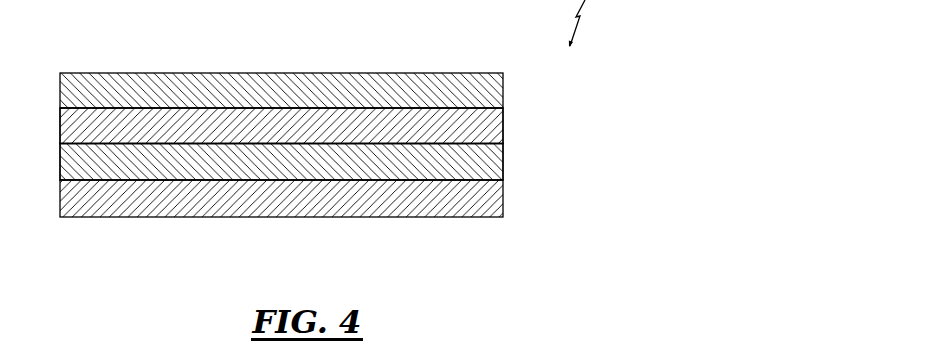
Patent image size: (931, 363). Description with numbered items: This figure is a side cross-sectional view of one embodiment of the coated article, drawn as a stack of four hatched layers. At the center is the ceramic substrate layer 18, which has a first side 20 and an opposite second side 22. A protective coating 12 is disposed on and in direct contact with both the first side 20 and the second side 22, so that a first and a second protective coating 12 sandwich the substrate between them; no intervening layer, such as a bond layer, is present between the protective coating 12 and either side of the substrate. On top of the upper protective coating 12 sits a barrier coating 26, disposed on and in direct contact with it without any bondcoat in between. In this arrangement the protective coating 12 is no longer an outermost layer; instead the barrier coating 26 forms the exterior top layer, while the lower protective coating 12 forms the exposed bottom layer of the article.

The protective coating 12 is at (505, 112).
The core layer 18 is at (505, 162).
The first side 20 is at (60, 133).
The second side 22 is at (60, 167).
The barrier coating 26 is at (477, 72).